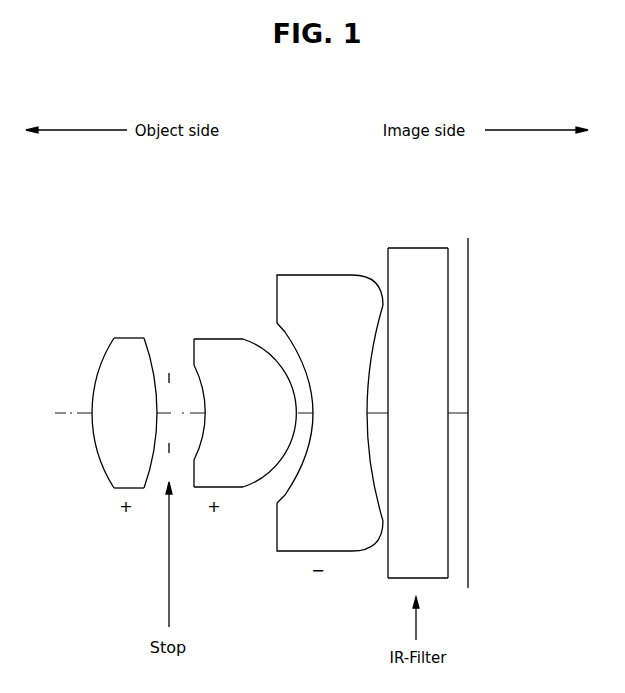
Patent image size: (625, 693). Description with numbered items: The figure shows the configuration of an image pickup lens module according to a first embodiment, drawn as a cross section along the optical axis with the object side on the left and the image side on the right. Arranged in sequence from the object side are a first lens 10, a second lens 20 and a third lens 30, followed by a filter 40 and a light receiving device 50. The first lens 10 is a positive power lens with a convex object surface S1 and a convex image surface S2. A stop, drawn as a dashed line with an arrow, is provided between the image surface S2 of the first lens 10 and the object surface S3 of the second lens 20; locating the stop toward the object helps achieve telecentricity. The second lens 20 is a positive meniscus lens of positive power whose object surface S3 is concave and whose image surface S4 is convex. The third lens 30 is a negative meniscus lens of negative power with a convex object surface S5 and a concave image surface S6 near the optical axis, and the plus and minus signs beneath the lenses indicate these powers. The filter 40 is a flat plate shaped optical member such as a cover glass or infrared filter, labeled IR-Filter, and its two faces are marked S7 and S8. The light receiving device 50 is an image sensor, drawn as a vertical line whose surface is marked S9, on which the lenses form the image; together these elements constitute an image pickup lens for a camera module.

The first lens 10 is at (117, 395).
The second lens 20 is at (239, 402).
The third lens 30 is at (318, 407).
The filter 40 is at (400, 409).
The light receiving device 50 is at (504, 384).
The object surface of the first lens S1 is at (100, 361).
The image surface of the first lens S2 is at (157, 350).
The object surface of the second lens S3 is at (198, 381).
The image surface of the second lens S4 is at (267, 356).
The object surface of the third lens S5 is at (289, 334).
The image surface of the third lens S6 is at (370, 285).
The object-side surface of IR filter S7 is at (388, 264).
The image-side surface of IR filter S8 is at (449, 258).
The image plane surface S9 is at (466, 238).